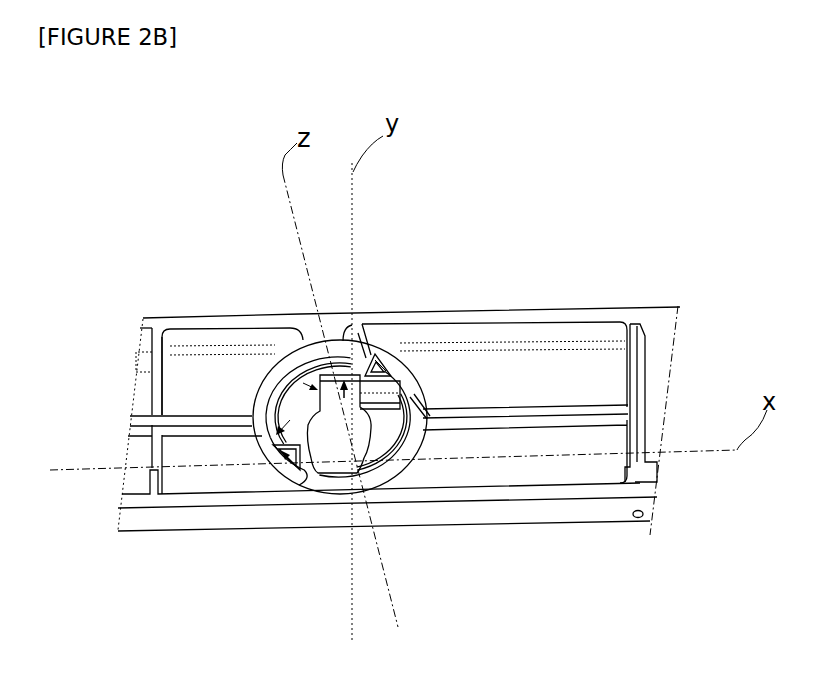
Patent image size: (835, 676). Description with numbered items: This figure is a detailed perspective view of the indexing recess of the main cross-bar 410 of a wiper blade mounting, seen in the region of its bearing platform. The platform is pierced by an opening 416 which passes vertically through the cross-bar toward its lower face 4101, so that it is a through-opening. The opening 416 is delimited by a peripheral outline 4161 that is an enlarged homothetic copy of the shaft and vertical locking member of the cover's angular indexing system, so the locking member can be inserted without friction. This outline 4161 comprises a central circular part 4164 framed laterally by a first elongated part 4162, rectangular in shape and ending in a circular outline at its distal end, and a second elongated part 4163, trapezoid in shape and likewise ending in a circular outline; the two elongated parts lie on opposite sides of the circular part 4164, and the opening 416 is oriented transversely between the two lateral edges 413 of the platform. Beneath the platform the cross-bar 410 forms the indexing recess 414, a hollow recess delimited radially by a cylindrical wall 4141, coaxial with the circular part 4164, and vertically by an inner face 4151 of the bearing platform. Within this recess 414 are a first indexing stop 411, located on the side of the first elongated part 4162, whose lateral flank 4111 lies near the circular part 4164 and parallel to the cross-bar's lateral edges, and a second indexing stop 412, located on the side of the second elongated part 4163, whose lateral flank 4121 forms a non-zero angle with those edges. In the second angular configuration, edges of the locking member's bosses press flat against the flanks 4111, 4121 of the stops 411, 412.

The main cross-bar 410 is at (670, 308).
The lower face 4101 is at (172, 315).
The first indexing stop 411 is at (385, 348).
The lateral flank 4111 is at (405, 380).
The second indexing stop 412 is at (258, 492).
The lateral flank 4121 is at (215, 322).
The lateral edges 413 is at (605, 309).
The indexing recess 414 is at (230, 494).
The cylindrical wall 4141 is at (250, 386).
The inner face 4151 is at (400, 487).
The opening 416 is at (364, 340).
The peripheral outline 4161 is at (296, 355).
The first elongated part 4162 is at (337, 375).
The second elongated part 4163 is at (325, 484).
The circular part 4164 is at (416, 487).